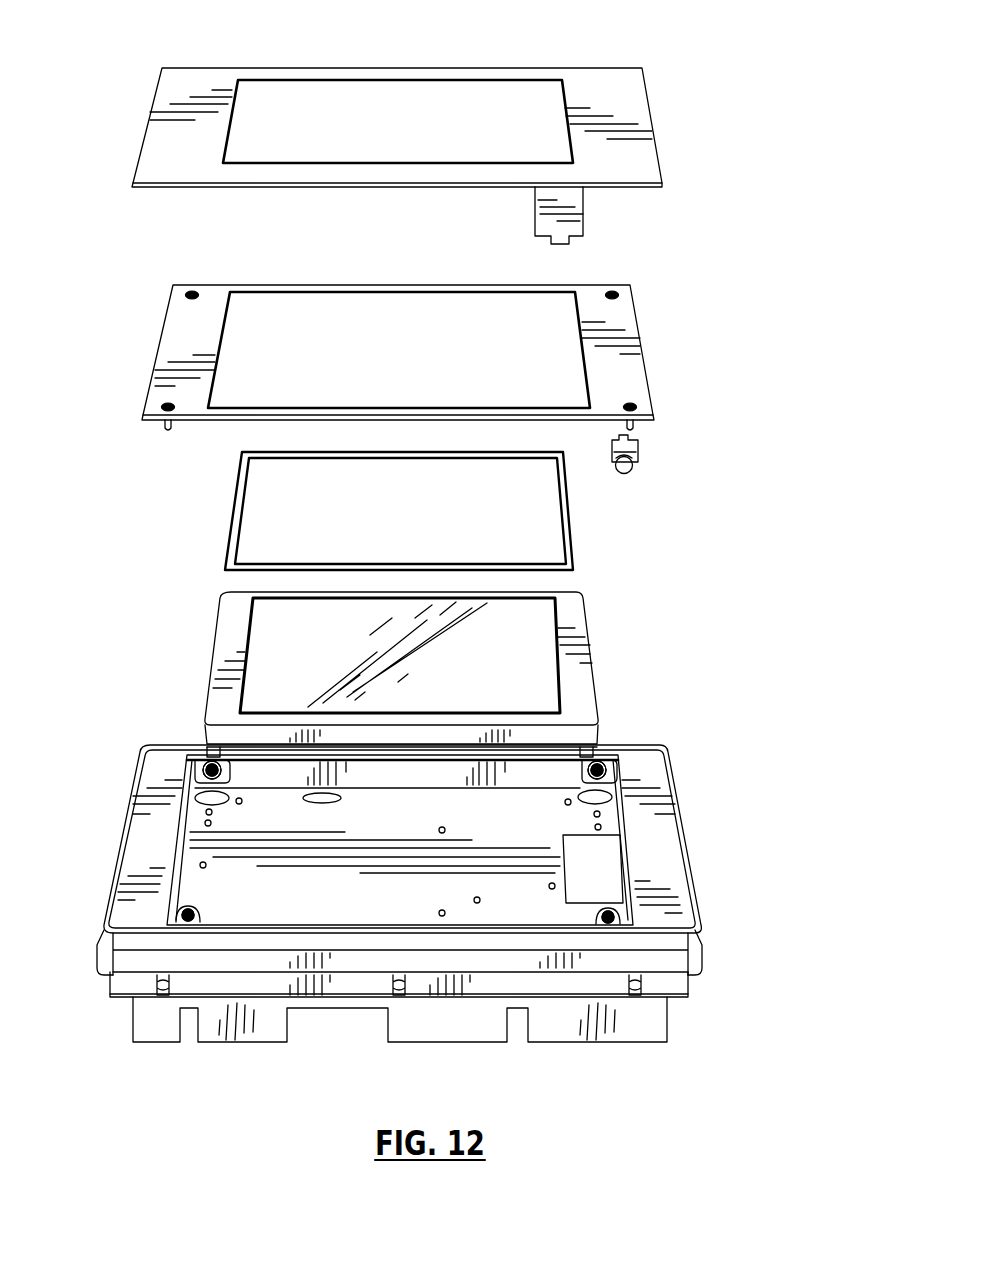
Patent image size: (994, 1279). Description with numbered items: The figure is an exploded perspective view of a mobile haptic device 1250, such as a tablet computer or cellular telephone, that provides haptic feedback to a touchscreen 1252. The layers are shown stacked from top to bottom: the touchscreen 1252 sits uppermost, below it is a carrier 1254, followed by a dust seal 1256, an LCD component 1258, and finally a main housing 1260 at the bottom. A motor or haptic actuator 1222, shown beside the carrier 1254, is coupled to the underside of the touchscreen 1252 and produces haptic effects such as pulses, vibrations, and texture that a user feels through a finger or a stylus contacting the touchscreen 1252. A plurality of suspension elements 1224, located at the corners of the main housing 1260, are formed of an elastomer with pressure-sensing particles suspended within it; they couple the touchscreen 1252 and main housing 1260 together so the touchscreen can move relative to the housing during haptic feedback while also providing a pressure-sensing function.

The mobile haptic device 1250 is at (765, 268).
The touchscreen 1252 is at (665, 104).
The carrier 1254 is at (655, 329).
The haptic actuator 1222 is at (648, 452).
The dust seal 1256 is at (583, 522).
The LCD component 1258 is at (607, 641).
The main housing 1260 is at (708, 818).
The suspension elements 1224 is at (210, 766).